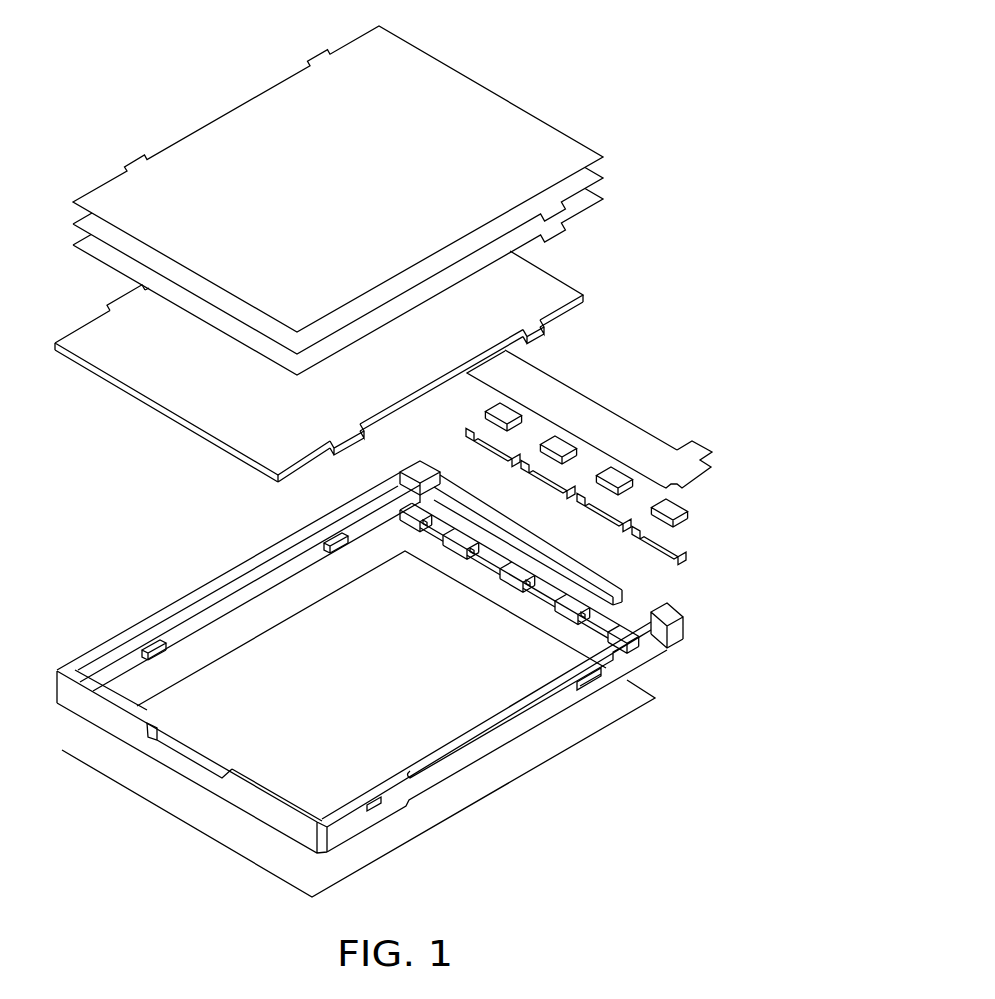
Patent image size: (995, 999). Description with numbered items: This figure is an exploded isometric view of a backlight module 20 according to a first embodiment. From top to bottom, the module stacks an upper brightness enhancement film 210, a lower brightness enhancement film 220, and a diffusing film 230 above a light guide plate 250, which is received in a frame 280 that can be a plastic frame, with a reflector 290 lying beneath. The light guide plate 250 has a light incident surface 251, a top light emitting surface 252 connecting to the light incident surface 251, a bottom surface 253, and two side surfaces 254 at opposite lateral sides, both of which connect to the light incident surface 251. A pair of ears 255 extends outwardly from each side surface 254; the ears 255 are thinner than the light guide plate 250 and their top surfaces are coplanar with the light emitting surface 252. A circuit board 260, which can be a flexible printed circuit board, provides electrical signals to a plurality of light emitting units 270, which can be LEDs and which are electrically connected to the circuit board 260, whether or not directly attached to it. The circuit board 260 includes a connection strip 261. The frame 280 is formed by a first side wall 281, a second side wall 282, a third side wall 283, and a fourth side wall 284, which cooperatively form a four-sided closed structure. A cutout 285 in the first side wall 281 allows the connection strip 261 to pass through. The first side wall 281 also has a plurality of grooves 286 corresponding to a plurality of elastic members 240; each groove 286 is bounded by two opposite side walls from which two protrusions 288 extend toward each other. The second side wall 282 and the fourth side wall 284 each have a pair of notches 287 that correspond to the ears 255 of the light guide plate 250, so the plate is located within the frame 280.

The backlight module 20 is at (235, 46).
The upper brightness enhancement film 210 is at (575, 147).
The lower brightness enhancement film 220 is at (588, 177).
The diffusing film 230 is at (589, 200).
The elastic members 240 is at (668, 543).
The light guide plate 250 is at (329, 368).
The light incident surface 251 is at (329, 364).
The top light emitting surface 252 is at (247, 442).
The bottom surface 253 is at (183, 423).
The side surfaces 254 is at (88, 318).
The ears 255 is at (546, 331).
The circuit board 260 is at (596, 417).
The connection strip 261 is at (697, 450).
The light emitting units 270 is at (668, 511).
The frame 280 is at (387, 662).
The first side wall 281 is at (530, 565).
The second side wall 282 is at (500, 717).
The third side wall 283 is at (173, 745).
The fourth side wall 284 is at (238, 582).
The cutout 285 is at (630, 611).
The grooves 286 is at (519, 567).
The notches 287 is at (147, 650).
The protrusions 288 is at (437, 533).
The reflector 290 is at (578, 720).